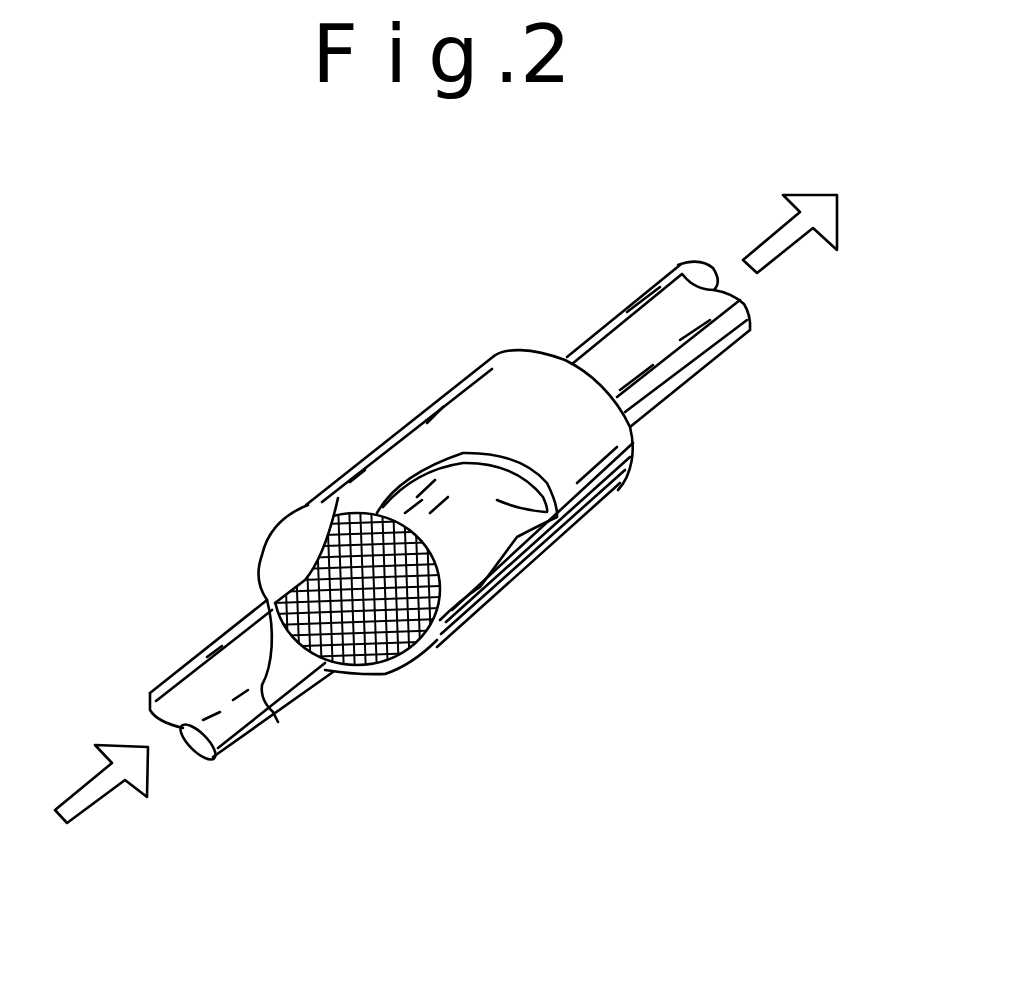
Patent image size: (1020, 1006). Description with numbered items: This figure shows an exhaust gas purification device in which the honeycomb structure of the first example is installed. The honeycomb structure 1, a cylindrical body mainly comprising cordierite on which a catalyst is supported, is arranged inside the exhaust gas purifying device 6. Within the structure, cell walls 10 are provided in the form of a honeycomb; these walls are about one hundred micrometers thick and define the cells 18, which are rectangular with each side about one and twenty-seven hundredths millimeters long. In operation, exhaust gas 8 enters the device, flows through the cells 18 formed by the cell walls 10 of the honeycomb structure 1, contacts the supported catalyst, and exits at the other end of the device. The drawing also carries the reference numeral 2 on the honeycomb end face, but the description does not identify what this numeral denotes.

The honeycomb structure 1 is at (557, 517).
The filter element 2 is at (385, 665).
The exhaust gas purifying device 6 is at (402, 365).
The exhaust gas 8 is at (797, 237).
The cell walls 10 is at (440, 648).
The cells 18 is at (325, 666).